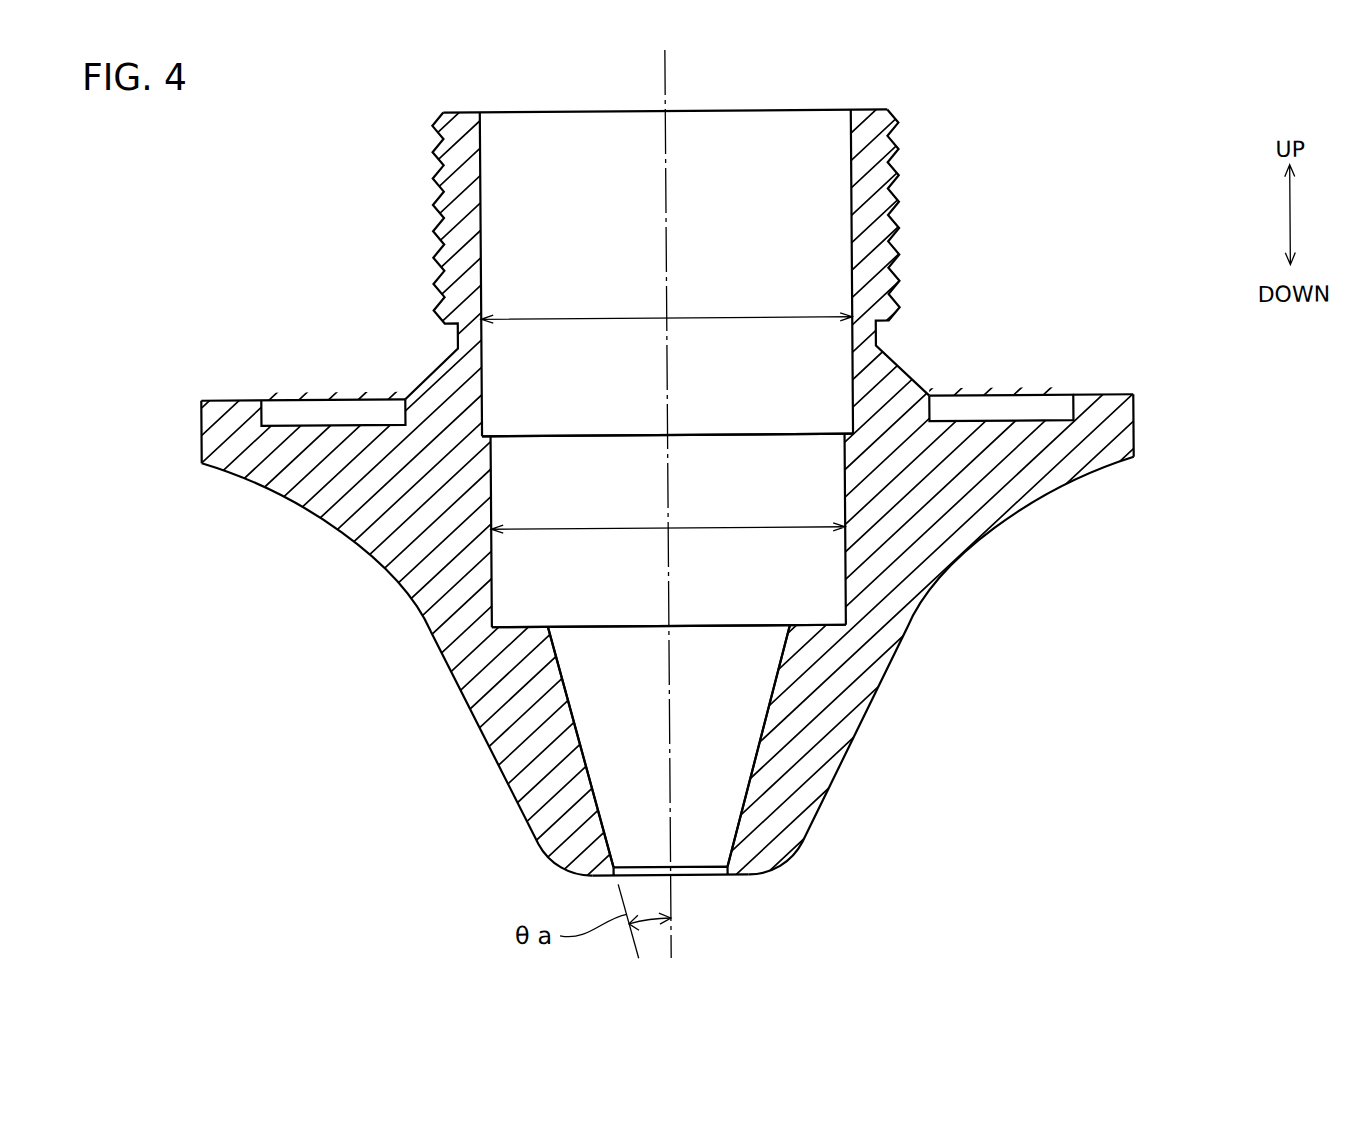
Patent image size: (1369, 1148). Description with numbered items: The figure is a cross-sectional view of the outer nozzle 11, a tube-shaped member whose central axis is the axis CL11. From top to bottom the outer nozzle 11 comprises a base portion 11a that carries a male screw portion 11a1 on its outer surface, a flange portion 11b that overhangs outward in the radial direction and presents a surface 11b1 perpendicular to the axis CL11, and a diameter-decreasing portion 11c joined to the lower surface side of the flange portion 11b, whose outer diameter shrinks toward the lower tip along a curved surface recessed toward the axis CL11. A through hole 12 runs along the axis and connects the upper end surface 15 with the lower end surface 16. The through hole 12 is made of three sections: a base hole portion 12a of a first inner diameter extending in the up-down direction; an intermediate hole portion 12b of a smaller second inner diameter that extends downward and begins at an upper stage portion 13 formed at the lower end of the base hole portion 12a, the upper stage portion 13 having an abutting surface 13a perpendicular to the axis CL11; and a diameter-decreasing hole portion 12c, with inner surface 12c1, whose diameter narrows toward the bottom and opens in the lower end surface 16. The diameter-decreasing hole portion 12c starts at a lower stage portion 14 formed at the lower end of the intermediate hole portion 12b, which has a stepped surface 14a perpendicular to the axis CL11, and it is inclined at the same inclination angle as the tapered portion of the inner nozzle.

The outer nozzle 11 is at (684, 504).
The base portion 11a is at (709, 220).
The male screw portion 11a1 is at (901, 190).
The flange portion 11b is at (724, 386).
The surface 11b1 is at (1100, 398).
The diameter-decreasing portion 11c is at (871, 700).
The through hole 12 is at (668, 489).
The base hole portion 12a is at (482, 243).
The intermediate hole portion 12b is at (491, 496).
The diameter-decreasing hole portion 12c is at (576, 733).
The tapered inner surface 12c1 is at (670, 746).
The upper stage portion 13 is at (667, 393).
The abutting surface 13a is at (483, 433).
The lower stage portion 14 is at (668, 586).
The stepped surface 14a is at (520, 626).
The upper end surface 15 is at (860, 110).
The lower end surface 16 is at (740, 876).
The axis CL11 is at (668, 68).